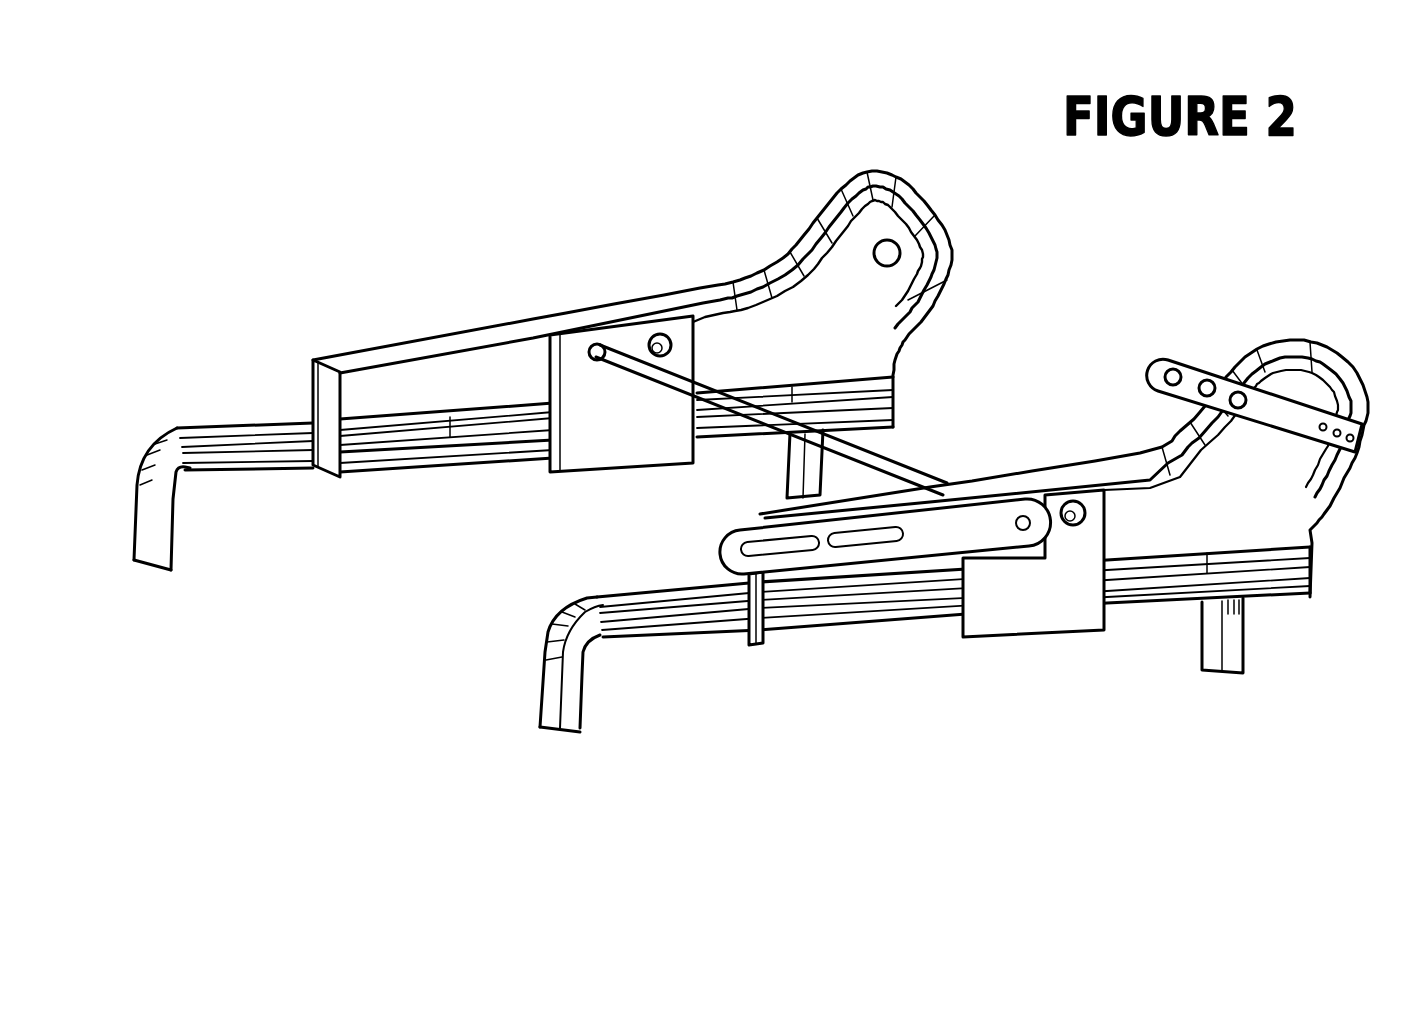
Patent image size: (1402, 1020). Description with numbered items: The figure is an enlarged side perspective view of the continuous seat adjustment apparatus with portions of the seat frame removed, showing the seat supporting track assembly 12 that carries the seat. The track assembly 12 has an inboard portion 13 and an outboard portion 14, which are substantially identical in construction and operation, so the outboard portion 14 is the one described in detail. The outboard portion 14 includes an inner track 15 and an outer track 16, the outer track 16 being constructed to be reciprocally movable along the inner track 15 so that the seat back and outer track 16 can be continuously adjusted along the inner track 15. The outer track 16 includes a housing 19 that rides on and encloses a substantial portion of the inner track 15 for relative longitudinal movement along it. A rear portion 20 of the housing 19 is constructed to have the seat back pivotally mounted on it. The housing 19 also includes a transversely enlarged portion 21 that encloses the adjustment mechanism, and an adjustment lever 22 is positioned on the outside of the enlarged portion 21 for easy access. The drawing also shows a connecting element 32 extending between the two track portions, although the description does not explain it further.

The seat supporting track assembly 12 is at (751, 497).
The inboard portion 13 is at (568, 370).
The outboard portion 14 is at (954, 537).
The inner track 15 is at (630, 642).
The outer track 16 is at (893, 613).
The housing 19 is at (747, 642).
The rear portion 20 is at (1318, 392).
The transversely enlarged portion 21 is at (1047, 617).
The adjustment lever 22 is at (730, 540).
The connecting rod 32 is at (885, 462).